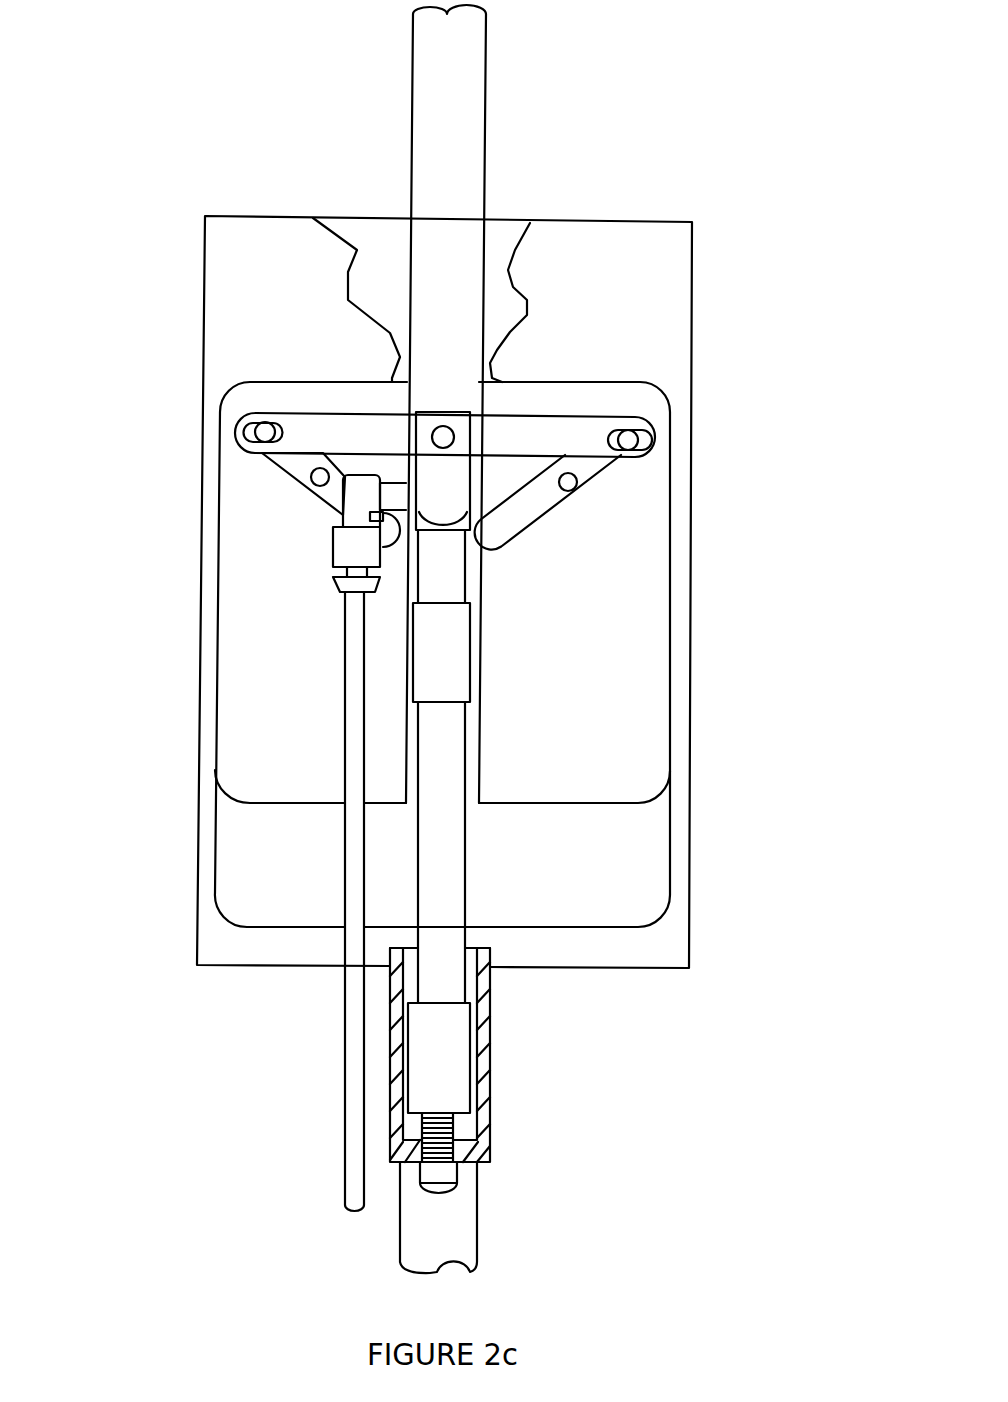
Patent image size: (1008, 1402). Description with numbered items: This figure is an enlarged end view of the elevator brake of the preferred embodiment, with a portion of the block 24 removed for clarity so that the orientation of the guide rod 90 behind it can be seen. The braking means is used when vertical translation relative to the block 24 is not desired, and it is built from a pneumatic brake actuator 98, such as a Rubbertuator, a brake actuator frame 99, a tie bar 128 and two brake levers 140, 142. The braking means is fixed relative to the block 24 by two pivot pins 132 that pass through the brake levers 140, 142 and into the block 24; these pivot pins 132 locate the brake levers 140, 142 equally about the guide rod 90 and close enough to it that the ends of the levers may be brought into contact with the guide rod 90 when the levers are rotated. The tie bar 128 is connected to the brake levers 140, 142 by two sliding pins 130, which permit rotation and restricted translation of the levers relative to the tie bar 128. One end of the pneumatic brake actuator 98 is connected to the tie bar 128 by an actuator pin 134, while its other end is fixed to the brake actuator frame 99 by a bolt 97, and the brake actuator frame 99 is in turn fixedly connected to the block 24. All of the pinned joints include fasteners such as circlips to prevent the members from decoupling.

The block 24 is at (690, 868).
The guide rod 90 is at (486, 170).
The bolt 97 is at (453, 1185).
The pneumatic brake actuator 98 is at (458, 668).
The brake actuator frame 99 is at (490, 1095).
The tie bar 128 is at (535, 418).
The sliding pins 130 is at (253, 427).
The pivot pins 132 is at (310, 478).
The actuator pin 134 is at (433, 430).
The brake lever 140 is at (325, 500).
The brake lever 142 is at (550, 518).